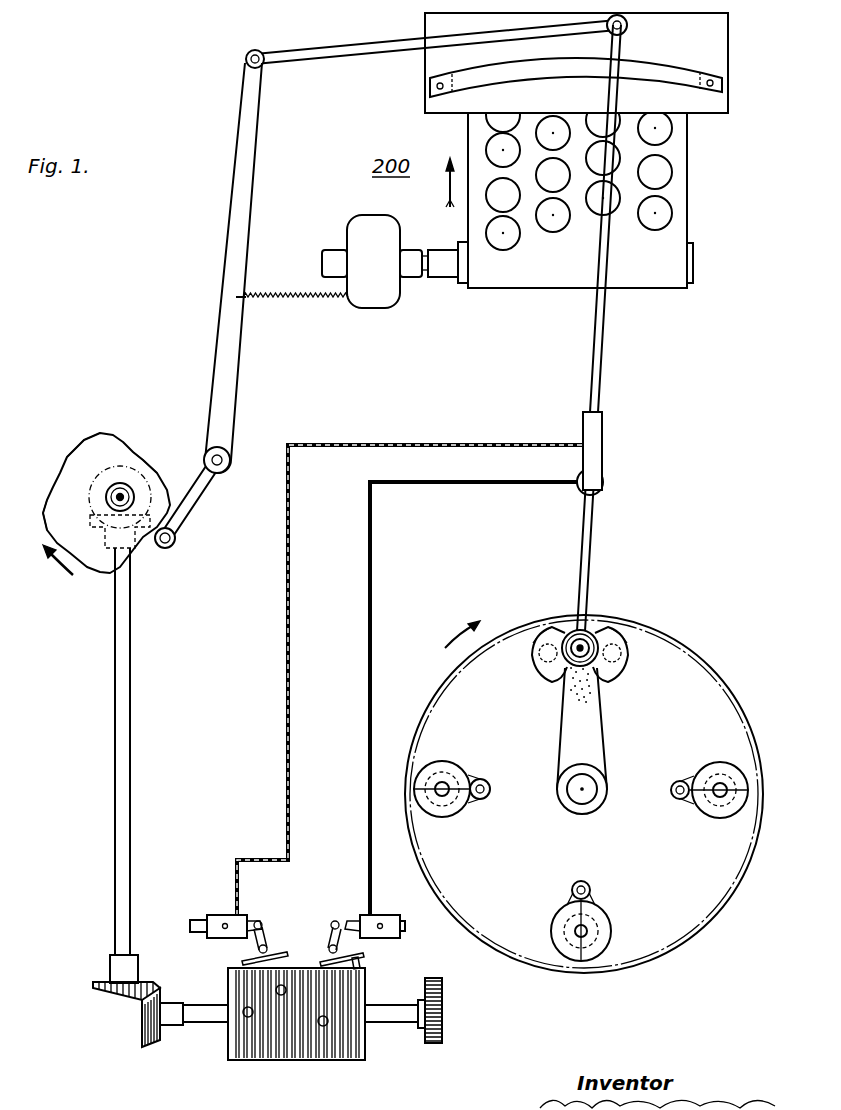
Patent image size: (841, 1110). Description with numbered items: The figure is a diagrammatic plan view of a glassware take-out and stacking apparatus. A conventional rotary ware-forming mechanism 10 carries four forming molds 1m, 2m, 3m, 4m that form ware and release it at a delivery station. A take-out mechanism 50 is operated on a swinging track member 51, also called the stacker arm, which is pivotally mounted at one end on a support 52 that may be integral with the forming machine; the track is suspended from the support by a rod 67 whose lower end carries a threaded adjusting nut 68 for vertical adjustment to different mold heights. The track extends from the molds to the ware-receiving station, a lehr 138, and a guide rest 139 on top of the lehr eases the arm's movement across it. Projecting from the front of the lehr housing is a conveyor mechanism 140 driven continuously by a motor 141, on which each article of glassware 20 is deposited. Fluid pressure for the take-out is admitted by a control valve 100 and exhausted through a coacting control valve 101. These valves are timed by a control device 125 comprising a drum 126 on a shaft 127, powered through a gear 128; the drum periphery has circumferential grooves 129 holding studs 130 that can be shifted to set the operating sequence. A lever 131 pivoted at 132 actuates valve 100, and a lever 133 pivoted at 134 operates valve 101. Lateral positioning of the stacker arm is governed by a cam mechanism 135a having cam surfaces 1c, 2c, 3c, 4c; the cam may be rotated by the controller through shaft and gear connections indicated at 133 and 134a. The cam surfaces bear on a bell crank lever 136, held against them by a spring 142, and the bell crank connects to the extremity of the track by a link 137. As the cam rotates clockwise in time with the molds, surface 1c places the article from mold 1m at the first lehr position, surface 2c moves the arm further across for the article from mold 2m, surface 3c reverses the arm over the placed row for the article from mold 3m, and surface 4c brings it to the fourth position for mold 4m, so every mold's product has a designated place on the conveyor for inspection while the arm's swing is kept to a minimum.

The ware-forming mechanism 10 is at (673, 637).
The article of glassware 20 is at (600, 632).
The take-out mechanism 50 is at (602, 432).
The swinging track member 51 is at (603, 362).
The support 52 is at (598, 737).
The rod 67 is at (598, 630).
The threaded adjusting nut 68 is at (563, 630).
The forming mold 1m is at (618, 670).
The forming mold 2m is at (455, 817).
The forming mold 3m is at (598, 907).
The forming mold 4m is at (715, 762).
The control valve 100 is at (387, 915).
The control valve 101 is at (217, 915).
The control device 125 is at (412, 999).
The drum 126 is at (277, 1060).
The shaft 127 is at (398, 1025).
The gear 128 is at (435, 1047).
The circumferential grooves 129 is at (333, 1062).
The studs 130 is at (360, 963).
The lever 131 is at (332, 922).
The pivot 132 is at (337, 950).
The lever 133 is at (268, 942).
The pivot 134 is at (257, 950).
The shaft connection 134a is at (97, 515).
The cam mechanism 135a is at (93, 560).
The bell crank lever 136 is at (193, 513).
The link 137 is at (373, 57).
The lehr 138 is at (725, 62).
The guide rest 139 is at (673, 74).
The conveyor mechanism 140 is at (673, 289).
The motor 141 is at (383, 310).
The spring 142 is at (307, 302).
The cam surface 1c is at (148, 547).
The cam surface 2c is at (148, 467).
The cam surface 3c is at (77, 452).
The cam surface 4c is at (47, 528).